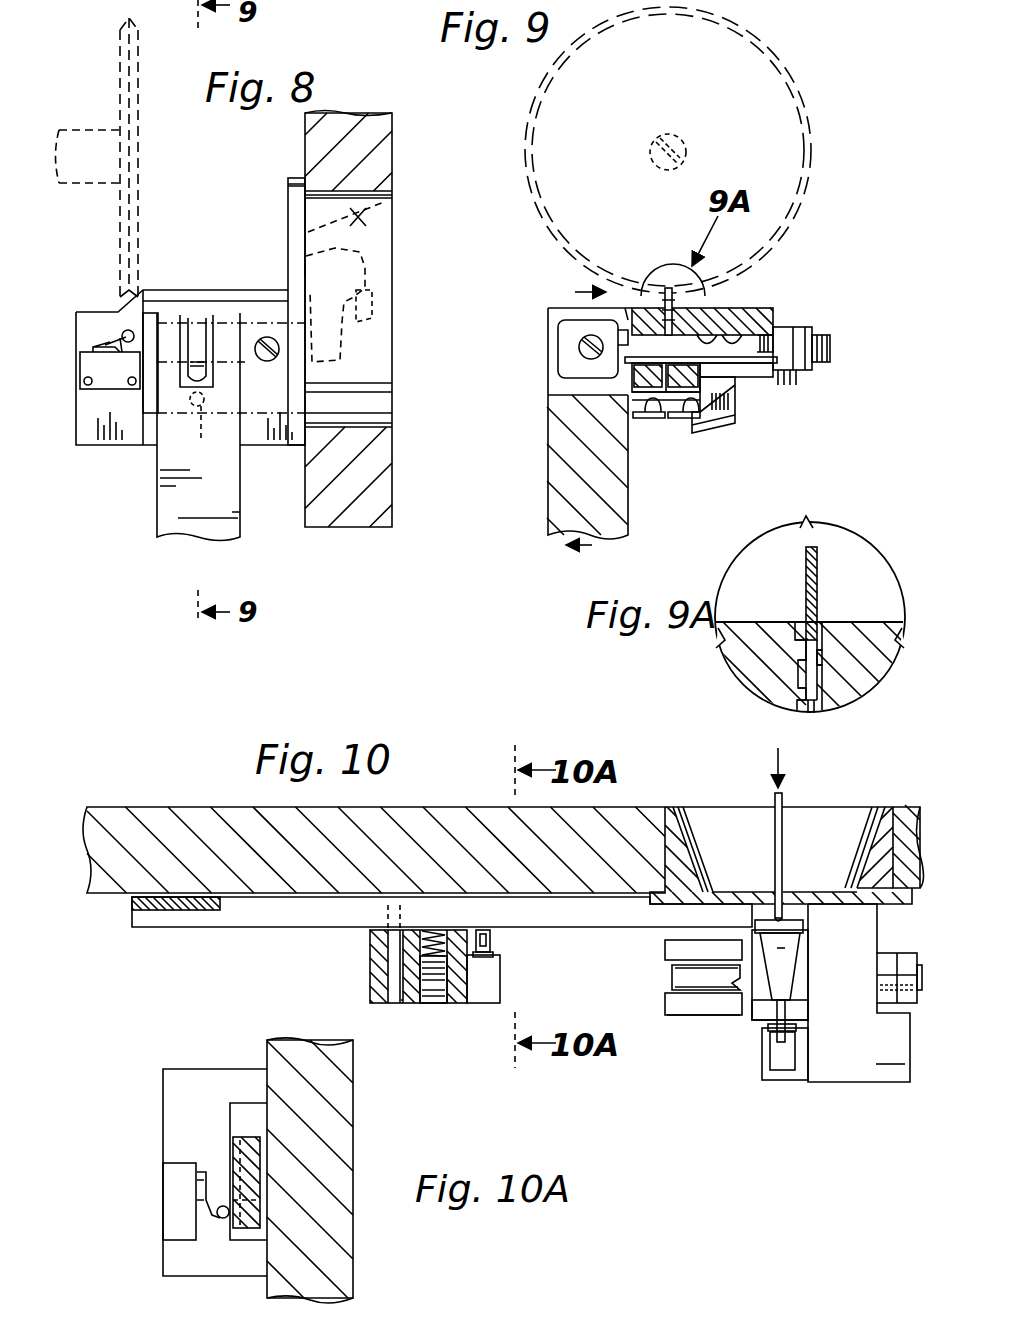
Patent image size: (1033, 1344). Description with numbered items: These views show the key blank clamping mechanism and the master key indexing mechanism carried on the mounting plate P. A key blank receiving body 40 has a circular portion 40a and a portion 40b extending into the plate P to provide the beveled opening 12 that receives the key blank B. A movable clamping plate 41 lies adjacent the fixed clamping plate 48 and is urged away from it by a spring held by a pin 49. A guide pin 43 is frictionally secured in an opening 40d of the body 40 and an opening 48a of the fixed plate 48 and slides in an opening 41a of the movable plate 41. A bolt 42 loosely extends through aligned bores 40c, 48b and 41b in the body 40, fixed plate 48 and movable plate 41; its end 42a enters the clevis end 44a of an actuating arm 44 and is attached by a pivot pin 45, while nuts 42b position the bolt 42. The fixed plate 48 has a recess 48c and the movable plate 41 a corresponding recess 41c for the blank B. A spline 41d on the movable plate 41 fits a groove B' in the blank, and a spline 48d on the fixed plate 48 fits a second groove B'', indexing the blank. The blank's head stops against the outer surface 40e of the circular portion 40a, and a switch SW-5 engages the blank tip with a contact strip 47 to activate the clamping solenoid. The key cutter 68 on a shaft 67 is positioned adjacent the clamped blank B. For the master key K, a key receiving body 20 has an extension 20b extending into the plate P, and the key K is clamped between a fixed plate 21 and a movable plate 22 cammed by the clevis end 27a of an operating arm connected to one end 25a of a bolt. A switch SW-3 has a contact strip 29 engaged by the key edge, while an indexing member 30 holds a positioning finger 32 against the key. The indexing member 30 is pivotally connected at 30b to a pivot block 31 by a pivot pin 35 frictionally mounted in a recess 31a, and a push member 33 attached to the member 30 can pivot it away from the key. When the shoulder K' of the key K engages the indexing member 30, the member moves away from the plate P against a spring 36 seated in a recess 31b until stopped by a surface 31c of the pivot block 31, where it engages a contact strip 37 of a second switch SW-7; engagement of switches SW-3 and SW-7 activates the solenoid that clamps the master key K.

In FIG. 8, the beveled opening 12 is at (392, 378).
In FIG. 8, the key blank B is at (382, 305).
In FIG. 9A, the key blank B is at (810, 592).
In FIG. 8, the portion of the key blank receiving body 40b is at (392, 226).
In FIG. 8, the circular portion 40a is at (290, 182).
In FIG. 8, the key blank receiving body 40 is at (80, 418).
In FIG. 9, the key blank receiving body 40 is at (737, 425).
In FIG. 8, the clevis end 44a is at (165, 316).
In FIG. 9, the clevis end 44a is at (556, 308).
In FIG. 8, the actuating arm 44 is at (158, 515).
In FIG. 9, the actuating arm 44 is at (548, 463).
In FIG. 8, the pivot pin 45 is at (165, 316).
In FIG. 9, the pivot pin 45 is at (578, 340).
In FIG. 8, the end of the bolt 42a is at (205, 316).
In FIG. 9, the end of the bolt 42a is at (560, 358).
In FIG. 8, the guide pin 43 is at (202, 428).
In FIG. 9, the guide pin 43 is at (740, 387).
In FIG. 8, the pin 49 is at (262, 362).
In FIG. 8, the switch SW-5 is at (92, 352).
In FIG. 8, the contact strip 47 is at (108, 320).
In FIG. 8, the outer surface 40e is at (305, 270).
In FIG. 8, the key cutter 68 is at (140, 205).
In FIG. 9, the key cutter 68 is at (792, 66).
In FIG. 8, the shaft 67 is at (78, 130).
In FIG. 9, the bore 41b is at (625, 318).
In FIG. 9, the bore 48b is at (714, 333).
In FIG. 9, the bore 40c is at (742, 310).
In FIG. 9, the bolt 42 is at (818, 340).
In FIG. 9, the nuts 42b is at (800, 380).
In FIG. 9, the opening 40d is at (736, 412).
In FIG. 9, the movable clamping plate 41 is at (640, 420).
In FIG. 9A, the movable clamping plate 41 is at (735, 622).
In FIG. 9, the opening 41a is at (650, 420).
In FIG. 9, the opening 48a is at (683, 420).
In FIG. 9, the fixed clamping plate 48 is at (688, 420).
In FIG. 9A, the fixed clamping plate 48 is at (852, 624).
In FIG. 9A, the recess 48c is at (818, 610).
In FIG. 9A, the spline 48d is at (828, 628).
In FIG. 9A, the recess 41c is at (775, 622).
In FIG. 9A, the spline 41d is at (797, 690).
In FIG. 9A, the groove B' is at (765, 696).
In FIG. 9A, the second groove B'' is at (856, 694).
In FIG. 10, the mounting plate P is at (158, 807).
In FIG. 10A, the mounting plate P is at (353, 1118).
In FIG. 10, the key receiving body 20 is at (872, 845).
In FIG. 10, the extension 20b is at (690, 850).
In FIG. 10, the master key K is at (810, 833).
In FIG. 10, the shoulder K' is at (800, 873).
In FIG. 10, the indexing member 30 is at (600, 922).
In FIG. 10A, the indexing member 30 is at (255, 1176).
In FIG. 10, the push member 33 is at (132, 900).
In FIG. 10, the pivotal connection 30b is at (386, 913).
In FIG. 10, the pivot block 31 is at (370, 992).
In FIG. 10A, the pivot block 31 is at (163, 1098).
In FIG. 10, the pivot pin 35 is at (390, 946).
In FIG. 10, the recess 31a is at (400, 970).
In FIG. 10, the spring 36 is at (438, 932).
In FIG. 10, the recess 31b is at (438, 1004).
In FIG. 10, the second switch SW-7 is at (492, 978).
In FIG. 10A, the second switch SW-7 is at (170, 1184).
In FIG. 10, the surface 31c is at (462, 934).
In FIG. 10A, the surface 31c is at (233, 1122).
In FIG. 10, the contact strip 37 is at (497, 935).
In FIG. 10A, the contact strip 37 is at (224, 1221).
In FIG. 10, the end of the bolt 25a is at (680, 985).
In FIG. 10, the clevis end 27a is at (688, 1016).
In FIG. 10, the fixed plate 21 is at (805, 1012).
In FIG. 10, the movable plate 22 is at (760, 1012).
In FIG. 10, the positioning finger 32 is at (785, 955).
In FIG. 10, the contact strip 29 is at (790, 1035).
In FIG. 10, the switch SW-3 is at (780, 1082).